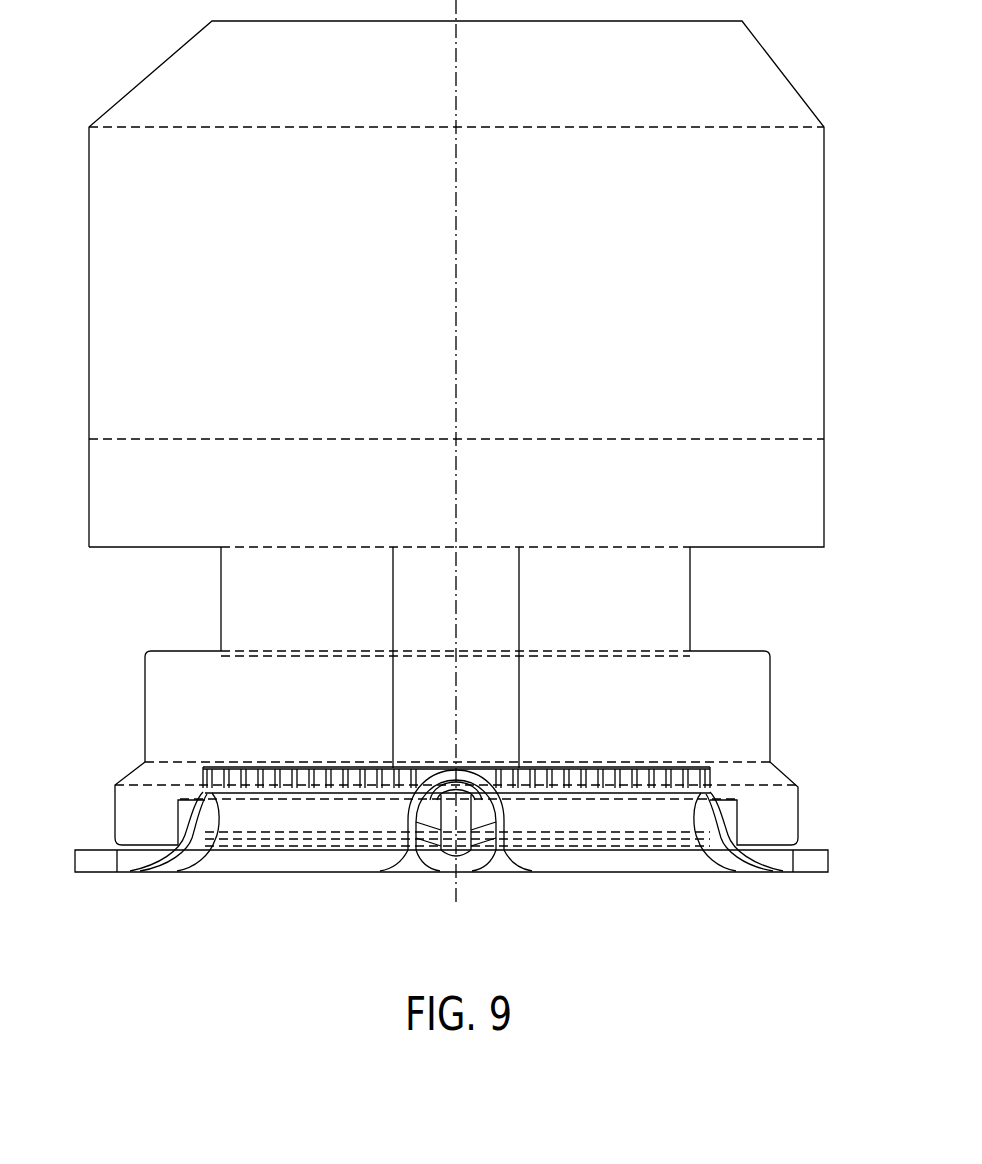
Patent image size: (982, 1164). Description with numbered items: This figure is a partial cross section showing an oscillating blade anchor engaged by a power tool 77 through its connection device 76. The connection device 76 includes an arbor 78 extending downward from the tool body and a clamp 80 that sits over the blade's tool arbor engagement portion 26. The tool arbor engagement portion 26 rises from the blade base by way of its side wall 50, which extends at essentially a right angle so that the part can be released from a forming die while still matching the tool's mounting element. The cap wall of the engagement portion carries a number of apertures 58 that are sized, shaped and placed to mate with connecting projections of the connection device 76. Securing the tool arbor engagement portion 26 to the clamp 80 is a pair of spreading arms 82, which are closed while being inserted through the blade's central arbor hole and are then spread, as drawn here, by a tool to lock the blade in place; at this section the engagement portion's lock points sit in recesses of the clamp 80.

The tool arbor engagement portion 26 is at (737, 882).
The side wall 50 is at (197, 823).
The apertures 58 is at (243, 775).
The connection device 76 is at (136, 628).
The power tool 77 is at (631, 334).
The arbor 78 is at (497, 610).
The clamp 80 is at (754, 707).
The spreading arms 82 is at (420, 860).